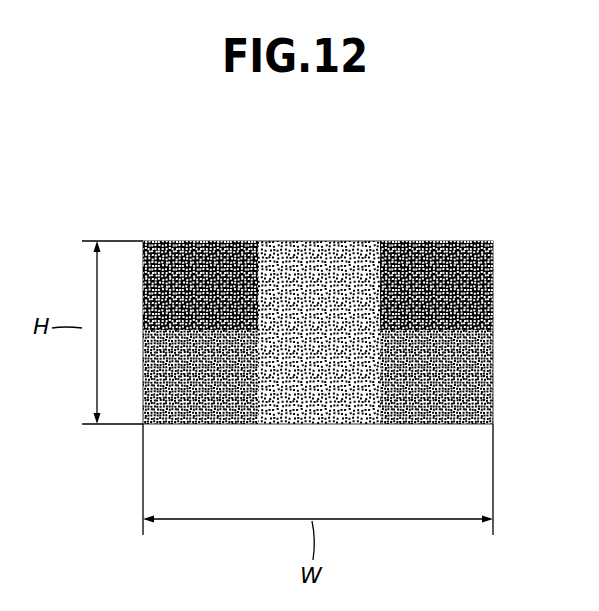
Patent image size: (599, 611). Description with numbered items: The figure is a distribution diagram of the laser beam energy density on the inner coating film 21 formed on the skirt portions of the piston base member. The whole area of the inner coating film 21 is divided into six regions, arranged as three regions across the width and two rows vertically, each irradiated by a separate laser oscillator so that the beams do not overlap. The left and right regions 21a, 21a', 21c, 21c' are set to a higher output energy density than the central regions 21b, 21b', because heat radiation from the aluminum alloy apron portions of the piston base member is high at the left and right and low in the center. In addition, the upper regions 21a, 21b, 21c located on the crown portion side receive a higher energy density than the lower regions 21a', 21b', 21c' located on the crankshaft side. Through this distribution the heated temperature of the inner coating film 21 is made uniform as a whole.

The inner coating film 21 is at (493, 232).
The right region (crown side) 21a is at (436, 241).
The central region (crown side) 21b is at (319, 288).
The left region (crown side) 21c is at (200, 241).
The right region (crankshaft side) 21a' is at (436, 413).
The central region (crankshaft side) 21b' is at (319, 411).
The left region (crankshaft side) 21c' is at (200, 413).